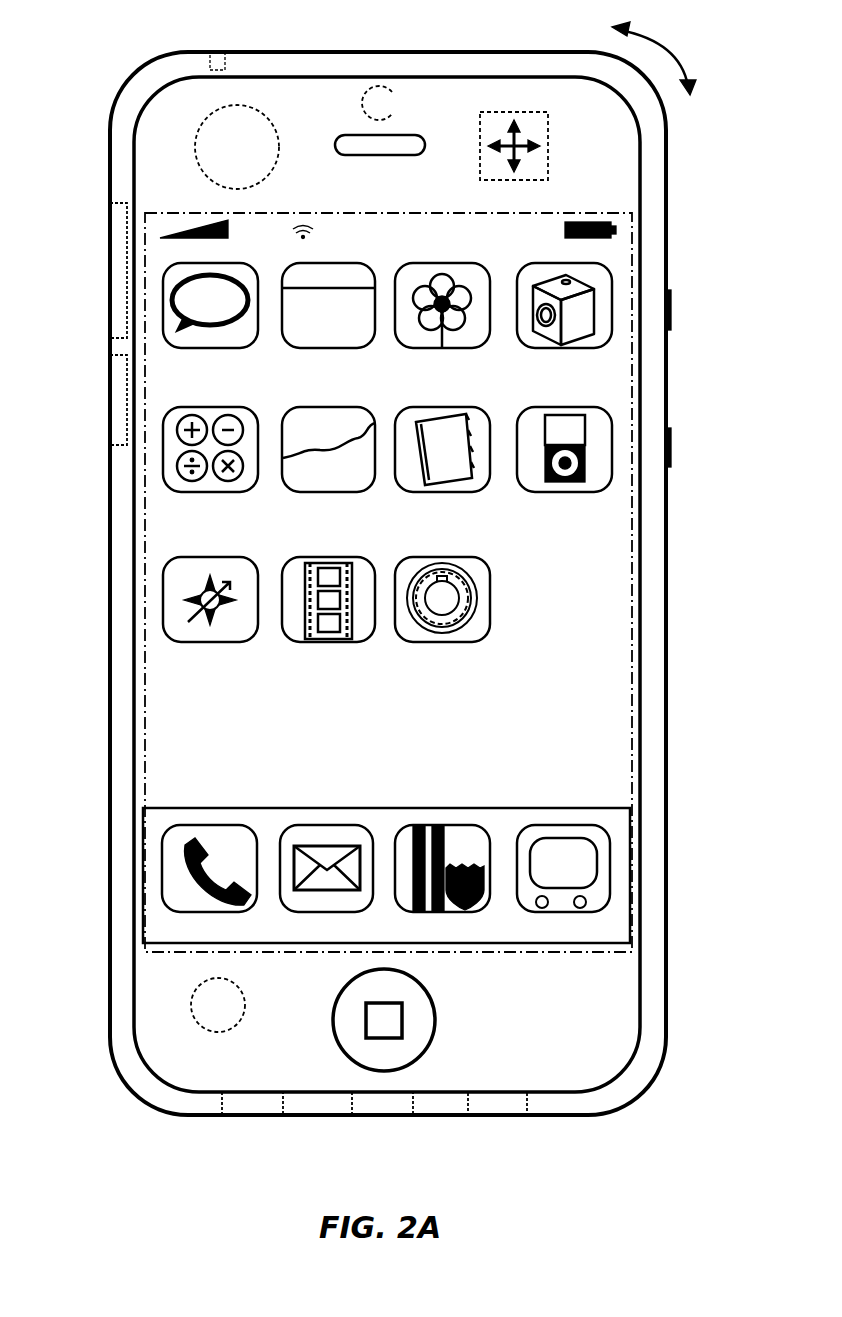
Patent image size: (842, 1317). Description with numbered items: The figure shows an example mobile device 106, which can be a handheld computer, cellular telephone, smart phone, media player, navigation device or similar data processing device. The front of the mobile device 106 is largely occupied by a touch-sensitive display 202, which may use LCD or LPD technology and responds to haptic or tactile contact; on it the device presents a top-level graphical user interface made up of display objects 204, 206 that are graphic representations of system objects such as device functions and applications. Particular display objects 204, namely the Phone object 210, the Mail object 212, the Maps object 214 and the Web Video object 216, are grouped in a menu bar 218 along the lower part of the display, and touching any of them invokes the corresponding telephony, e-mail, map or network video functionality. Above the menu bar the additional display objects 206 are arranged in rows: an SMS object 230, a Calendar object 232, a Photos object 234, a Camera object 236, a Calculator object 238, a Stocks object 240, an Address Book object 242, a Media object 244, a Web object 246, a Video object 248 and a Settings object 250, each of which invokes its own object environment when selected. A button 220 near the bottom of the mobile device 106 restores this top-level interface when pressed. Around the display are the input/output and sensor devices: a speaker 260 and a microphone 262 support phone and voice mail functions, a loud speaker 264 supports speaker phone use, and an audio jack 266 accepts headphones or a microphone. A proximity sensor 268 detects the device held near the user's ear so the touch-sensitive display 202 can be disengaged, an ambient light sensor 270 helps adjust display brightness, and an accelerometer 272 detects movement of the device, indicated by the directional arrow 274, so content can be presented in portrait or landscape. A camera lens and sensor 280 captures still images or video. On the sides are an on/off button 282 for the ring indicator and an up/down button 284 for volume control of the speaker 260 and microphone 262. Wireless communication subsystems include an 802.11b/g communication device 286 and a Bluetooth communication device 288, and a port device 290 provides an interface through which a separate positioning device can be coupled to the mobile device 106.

The mobile device 106 is at (467, 52).
The touch-sensitive display 202 is at (576, 212).
The display objects 204 is at (624, 822).
The display objects 206 is at (622, 256).
The Phone object 210 is at (210, 825).
The Mail object 212 is at (328, 825).
The Maps object 214 is at (460, 825).
The Web Video object 216 is at (565, 825).
The menu bar 218 is at (518, 943).
The button 220 is at (436, 1020).
The SMS object 230 is at (248, 348).
The Calendar object 232 is at (366, 348).
The Photos object 234 is at (472, 348).
The Camera object 236 is at (608, 350).
The Calculator object 238 is at (248, 492).
The Stocks object 240 is at (366, 492).
The Address Book object 242 is at (488, 492).
The Media object 244 is at (610, 492).
The Web object 246 is at (248, 642).
The Video object 248 is at (366, 642).
The Settings object 250 is at (488, 642).
The speaker 260 is at (365, 156).
The microphone 262 is at (282, 1105).
The loud speaker 264 is at (528, 1105).
The audio jack 266 is at (222, 62).
The proximity sensor 268 is at (277, 150).
The ambient light sensor 270 is at (237, 1028).
The accelerometer 272 is at (548, 150).
The directional arrow 274 is at (676, 57).
The camera lens and sensor 280 is at (395, 100).
The on/off button 282 is at (672, 310).
The up/down button 284 is at (672, 448).
The 802.11b/g communication device 286 is at (112, 206).
The Bluetooth communication device 288 is at (112, 356).
The port device 290 is at (413, 1105).